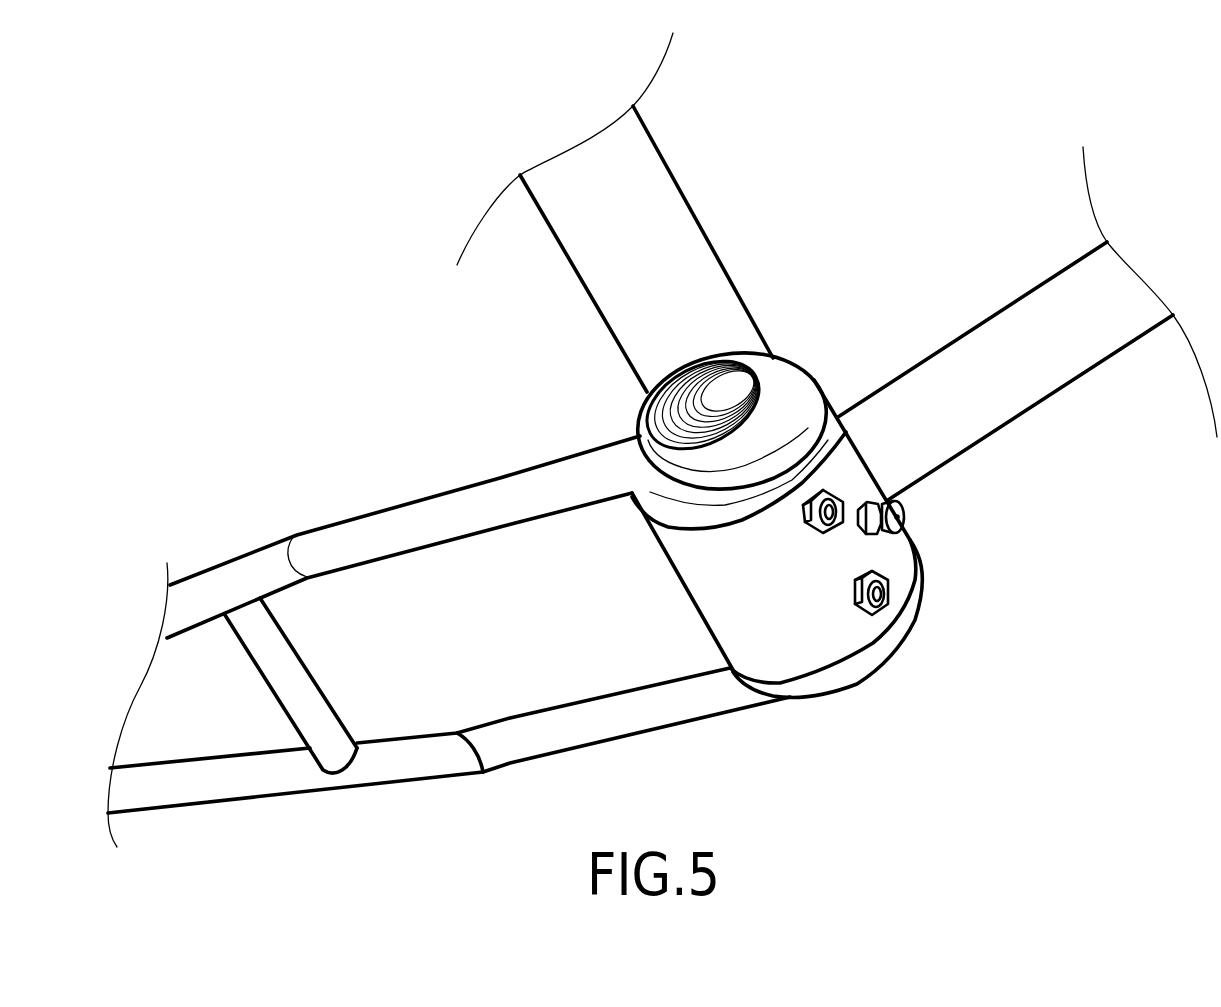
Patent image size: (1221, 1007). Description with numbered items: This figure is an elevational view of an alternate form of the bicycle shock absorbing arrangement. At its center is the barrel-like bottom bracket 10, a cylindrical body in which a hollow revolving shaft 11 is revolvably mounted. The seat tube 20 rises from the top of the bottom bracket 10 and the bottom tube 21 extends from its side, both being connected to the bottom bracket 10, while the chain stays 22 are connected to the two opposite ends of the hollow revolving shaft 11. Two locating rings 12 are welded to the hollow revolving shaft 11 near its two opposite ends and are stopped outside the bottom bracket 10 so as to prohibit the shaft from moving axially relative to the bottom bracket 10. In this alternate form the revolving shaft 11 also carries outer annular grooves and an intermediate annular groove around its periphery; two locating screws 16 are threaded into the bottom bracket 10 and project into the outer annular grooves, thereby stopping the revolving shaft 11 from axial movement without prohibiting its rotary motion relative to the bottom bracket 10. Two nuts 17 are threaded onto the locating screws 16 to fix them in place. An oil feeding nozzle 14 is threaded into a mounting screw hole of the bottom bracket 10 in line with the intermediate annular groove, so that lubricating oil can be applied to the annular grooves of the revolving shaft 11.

The bottom bracket 10 is at (737, 572).
The hollow revolving shaft 11 is at (762, 433).
The locating rings 12 is at (800, 423).
The oil feeding nozzle 14 is at (904, 518).
The locating screws 16 is at (845, 502).
The nuts 17 is at (824, 489).
The seat tube 20 is at (638, 268).
The bottom tube 21 is at (1068, 328).
The chain stays 22 is at (428, 535).